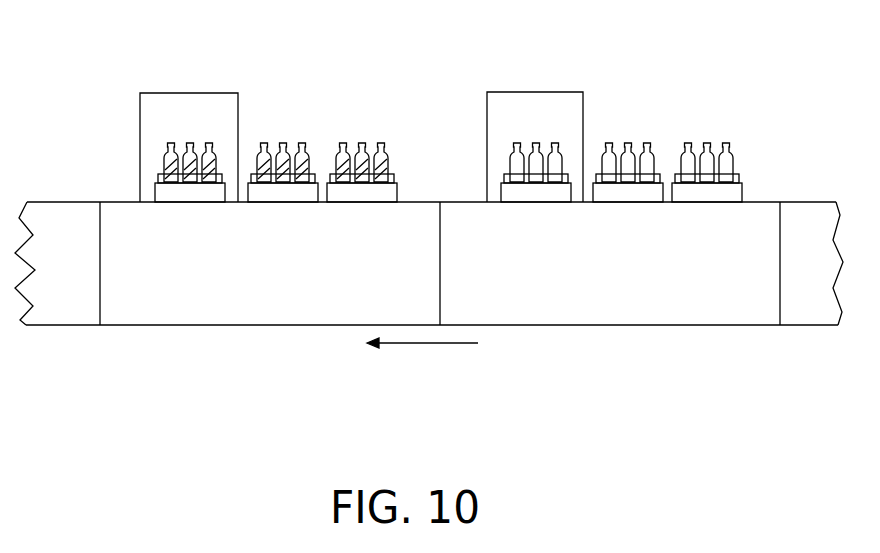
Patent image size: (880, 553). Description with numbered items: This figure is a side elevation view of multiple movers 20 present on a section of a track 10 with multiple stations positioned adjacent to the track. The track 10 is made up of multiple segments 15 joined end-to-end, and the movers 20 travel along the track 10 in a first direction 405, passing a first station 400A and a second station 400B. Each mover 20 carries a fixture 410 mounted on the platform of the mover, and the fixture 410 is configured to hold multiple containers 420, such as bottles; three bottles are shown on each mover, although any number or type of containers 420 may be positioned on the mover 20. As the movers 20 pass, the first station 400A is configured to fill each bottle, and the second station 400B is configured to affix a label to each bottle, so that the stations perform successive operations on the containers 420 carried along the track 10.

The track 10 is at (669, 350).
The segment 15 is at (75, 289).
The mover 20 is at (190, 202).
The first station 400A is at (545, 92).
The second station 400B is at (203, 93).
The first direction 405 is at (438, 345).
The fixture 410 is at (678, 175).
The containers 420 is at (724, 141).